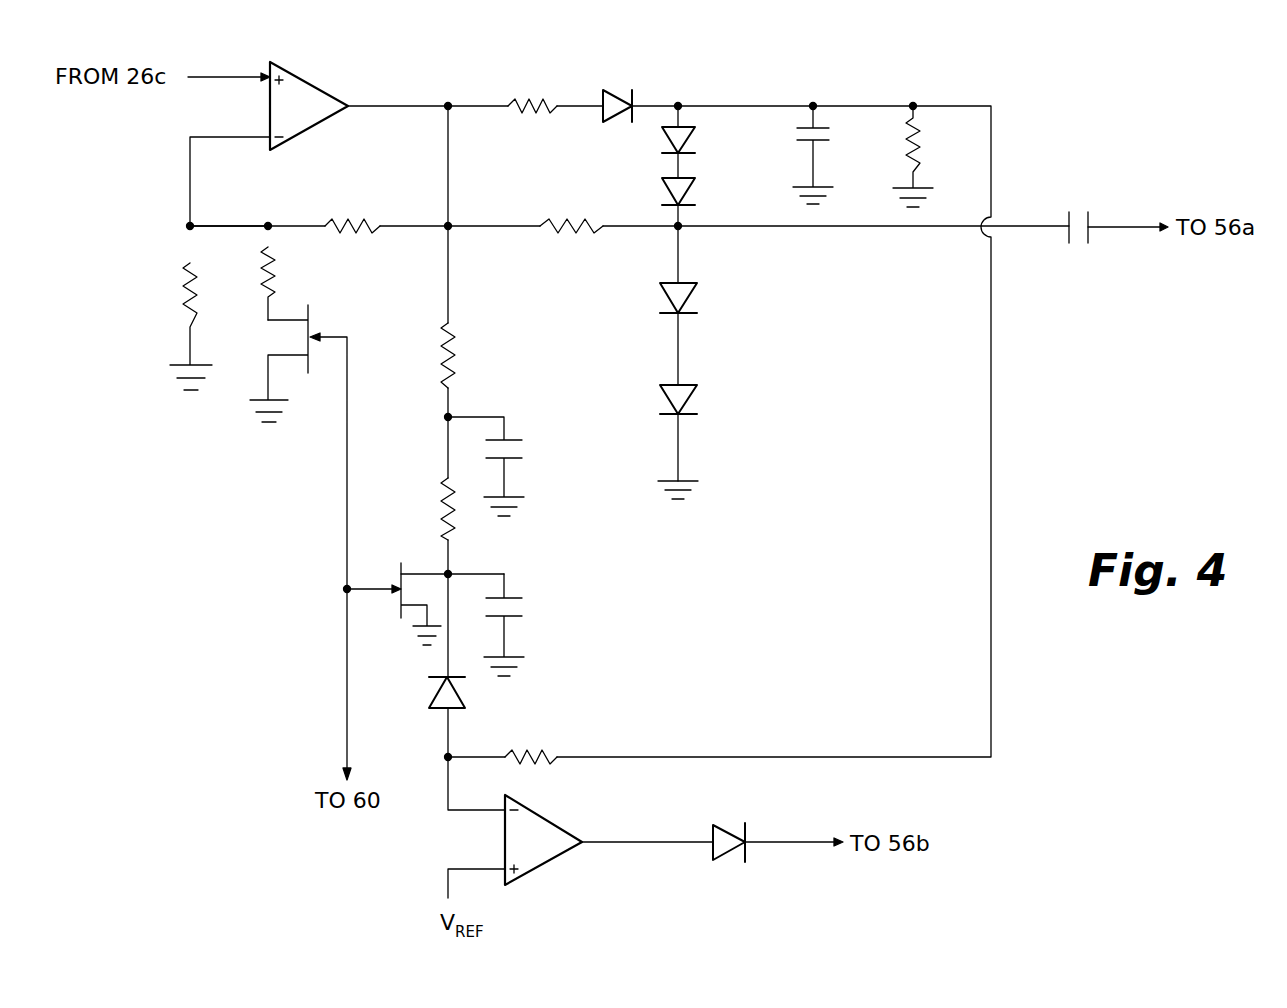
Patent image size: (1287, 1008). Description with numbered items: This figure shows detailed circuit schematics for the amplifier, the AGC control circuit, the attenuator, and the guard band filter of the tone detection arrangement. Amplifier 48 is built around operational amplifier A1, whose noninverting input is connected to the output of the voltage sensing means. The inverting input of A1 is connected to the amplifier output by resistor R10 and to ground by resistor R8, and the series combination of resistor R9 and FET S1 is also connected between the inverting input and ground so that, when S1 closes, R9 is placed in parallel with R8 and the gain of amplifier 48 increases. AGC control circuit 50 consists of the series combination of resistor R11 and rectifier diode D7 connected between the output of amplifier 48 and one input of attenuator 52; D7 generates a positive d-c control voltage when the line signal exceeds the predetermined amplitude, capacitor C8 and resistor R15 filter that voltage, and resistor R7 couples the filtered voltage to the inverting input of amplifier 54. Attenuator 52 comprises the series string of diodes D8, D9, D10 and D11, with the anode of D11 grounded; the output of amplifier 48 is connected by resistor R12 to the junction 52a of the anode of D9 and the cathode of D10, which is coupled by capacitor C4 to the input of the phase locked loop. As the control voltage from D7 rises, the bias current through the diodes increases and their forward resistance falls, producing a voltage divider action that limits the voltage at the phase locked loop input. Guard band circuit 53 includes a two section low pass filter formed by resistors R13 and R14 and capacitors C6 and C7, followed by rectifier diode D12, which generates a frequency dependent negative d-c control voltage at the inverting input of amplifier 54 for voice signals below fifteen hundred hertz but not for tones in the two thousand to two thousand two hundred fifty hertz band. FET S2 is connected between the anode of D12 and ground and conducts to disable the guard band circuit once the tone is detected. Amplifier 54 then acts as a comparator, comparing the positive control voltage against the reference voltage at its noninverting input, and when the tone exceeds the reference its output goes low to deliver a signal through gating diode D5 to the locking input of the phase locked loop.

The operational amplifier A1 is at (309, 106).
The amplifier 48 is at (347, 188).
The resistor R8 is at (185, 300).
The resistor R9 is at (273, 283).
The resistor R10 is at (357, 222).
The resistor R11 is at (541, 110).
The resistor R12 is at (571, 232).
The resistor R13 is at (450, 362).
The resistor R14 is at (444, 505).
The resistor R15 is at (915, 152).
The resistor R7 is at (545, 749).
The FET S1 is at (353, 330).
The FET S2 is at (381, 644).
The rectifier diode D7 is at (616, 95).
The diode D8 is at (690, 145).
The diode D9 is at (690, 190).
The diode D10 is at (690, 300).
The diode D11 is at (690, 402).
The rectifier diode D12 is at (432, 692).
The gating diode D5 is at (725, 858).
The capacitor C4 is at (1083, 215).
The capacitor C6 is at (522, 453).
The capacitor C7 is at (522, 608).
The capacitor C8 is at (830, 135).
The AGC control circuit 50 is at (714, 89).
The attenuator 52 is at (763, 291).
The node of diode string 52a is at (674, 232).
The guard band filter circuit 53 is at (510, 563).
The amplifier 54 is at (552, 830).